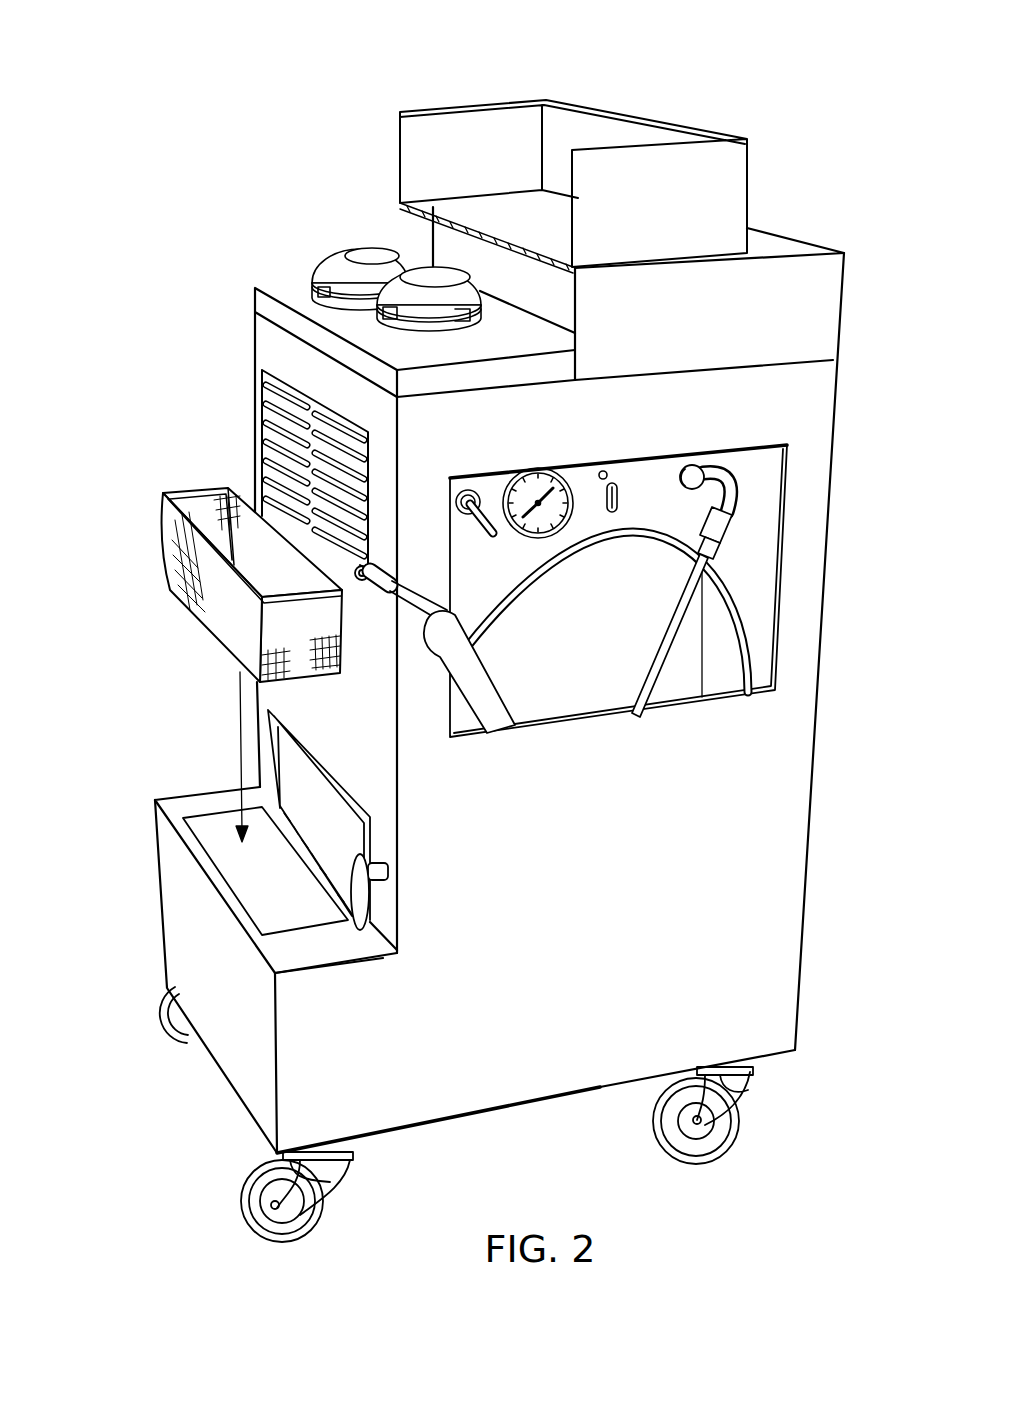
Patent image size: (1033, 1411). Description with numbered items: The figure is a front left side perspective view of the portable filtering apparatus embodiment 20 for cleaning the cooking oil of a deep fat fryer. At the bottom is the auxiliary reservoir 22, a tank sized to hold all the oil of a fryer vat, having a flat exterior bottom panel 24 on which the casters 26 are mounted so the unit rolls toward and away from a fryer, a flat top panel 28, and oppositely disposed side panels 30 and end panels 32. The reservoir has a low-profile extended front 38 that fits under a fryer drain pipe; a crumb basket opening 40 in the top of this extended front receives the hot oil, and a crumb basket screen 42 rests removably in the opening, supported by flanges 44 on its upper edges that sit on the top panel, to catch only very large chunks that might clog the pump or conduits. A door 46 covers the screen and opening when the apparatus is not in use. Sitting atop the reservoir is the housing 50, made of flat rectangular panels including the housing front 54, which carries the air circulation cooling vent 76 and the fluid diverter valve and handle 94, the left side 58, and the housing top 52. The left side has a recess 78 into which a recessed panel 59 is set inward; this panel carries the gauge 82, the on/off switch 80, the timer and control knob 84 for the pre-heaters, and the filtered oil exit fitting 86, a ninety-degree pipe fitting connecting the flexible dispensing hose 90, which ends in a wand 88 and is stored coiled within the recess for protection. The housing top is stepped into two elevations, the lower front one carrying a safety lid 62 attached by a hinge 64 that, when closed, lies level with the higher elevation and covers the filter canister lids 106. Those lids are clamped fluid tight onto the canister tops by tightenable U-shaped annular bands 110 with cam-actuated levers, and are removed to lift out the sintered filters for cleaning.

The embodiment 20 is at (737, 88).
The auxiliary reservoir 22 is at (648, 1008).
The flat exterior bottom panel 24 is at (763, 1063).
The casters 26 is at (313, 1227).
The flat top panel 28 is at (285, 958).
The side panels 30 is at (770, 980).
The end panels 32 is at (183, 977).
The extended front 38 is at (160, 800).
The crumb basket opening 40 is at (213, 838).
The crumb basket screen 42 is at (165, 568).
The flanges 44 is at (160, 492).
The door 46 is at (307, 752).
The housing 50 is at (793, 307).
The housing top 52 is at (278, 293).
The housing front 54 is at (267, 333).
The left side 58 is at (758, 812).
The recessed panel 59 is at (588, 668).
The safety lid 62 is at (585, 122).
The hinge 64 is at (433, 272).
The cooling vent 76 is at (285, 425).
The recess 78 is at (770, 492).
The on/off switch 80 is at (468, 492).
The gauge 82 is at (538, 480).
The timer and control knob 84 is at (613, 488).
The filtered oil exit fitting 86 is at (700, 472).
The wand 88 is at (485, 703).
The flexible dispensing hose 90 is at (590, 547).
The fluid diverter valve and handle 94 is at (353, 893).
The filter canister lids 106 is at (423, 318).
The tightenable U-shaped annular bands 110 is at (350, 258).